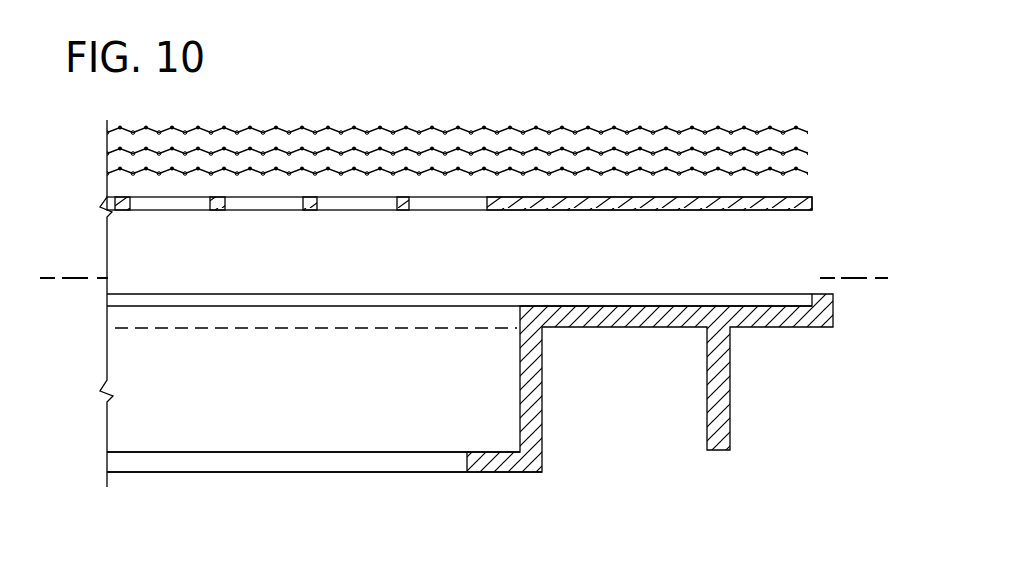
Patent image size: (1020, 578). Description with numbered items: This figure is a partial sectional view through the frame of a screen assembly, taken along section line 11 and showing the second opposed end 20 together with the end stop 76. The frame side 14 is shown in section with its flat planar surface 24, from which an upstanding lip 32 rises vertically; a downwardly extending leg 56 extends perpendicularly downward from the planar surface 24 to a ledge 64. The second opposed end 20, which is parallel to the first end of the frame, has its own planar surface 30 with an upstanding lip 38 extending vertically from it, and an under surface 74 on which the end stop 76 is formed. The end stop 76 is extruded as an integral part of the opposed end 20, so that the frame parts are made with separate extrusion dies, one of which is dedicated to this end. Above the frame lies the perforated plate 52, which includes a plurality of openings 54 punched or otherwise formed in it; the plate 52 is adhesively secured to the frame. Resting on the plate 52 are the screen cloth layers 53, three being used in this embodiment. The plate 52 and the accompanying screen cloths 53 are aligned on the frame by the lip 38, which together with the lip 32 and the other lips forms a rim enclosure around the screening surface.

The section line 11- 11 is at (853, 277).
The opposed side 14 is at (360, 477).
The second opposed end 20 is at (802, 410).
The planar surface 24 is at (410, 306).
The planar surface 30 is at (732, 305).
The upstanding lip 32 is at (267, 294).
The upstanding lip 38 is at (815, 293).
The perforated plate 52 is at (812, 204).
The screen cloth layers 53 is at (808, 130).
The openings 54 is at (273, 205).
The downwardly extending leg 56 is at (233, 417).
The ledge 64 is at (307, 457).
The under surface 74 is at (782, 328).
The end stop 76 is at (713, 452).